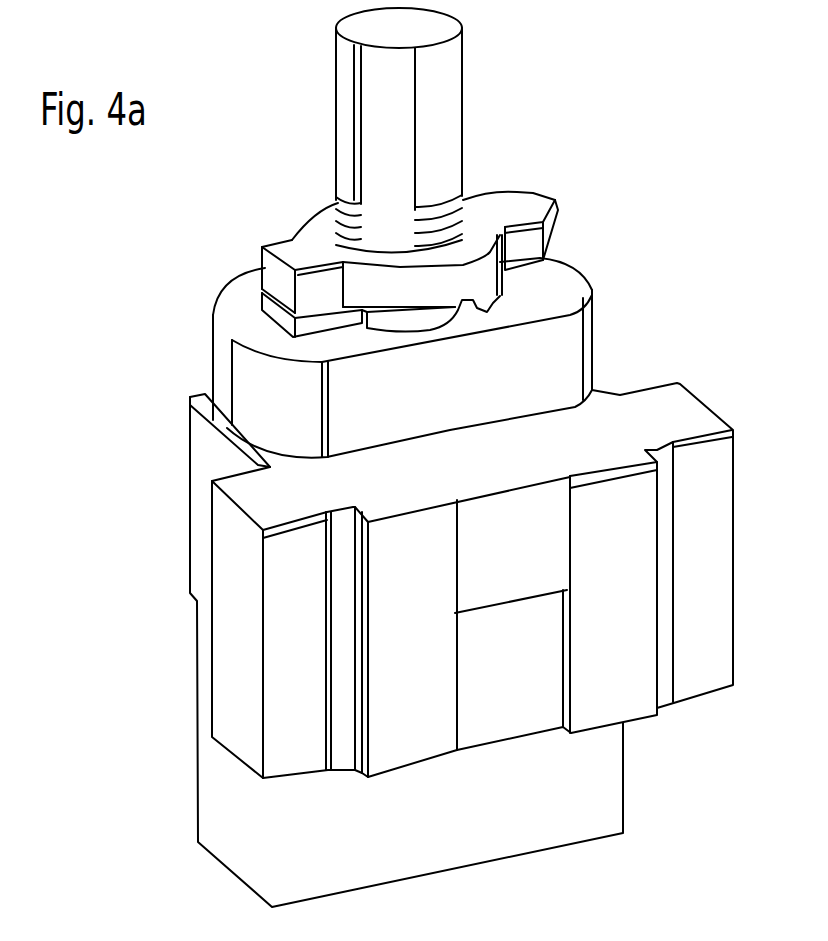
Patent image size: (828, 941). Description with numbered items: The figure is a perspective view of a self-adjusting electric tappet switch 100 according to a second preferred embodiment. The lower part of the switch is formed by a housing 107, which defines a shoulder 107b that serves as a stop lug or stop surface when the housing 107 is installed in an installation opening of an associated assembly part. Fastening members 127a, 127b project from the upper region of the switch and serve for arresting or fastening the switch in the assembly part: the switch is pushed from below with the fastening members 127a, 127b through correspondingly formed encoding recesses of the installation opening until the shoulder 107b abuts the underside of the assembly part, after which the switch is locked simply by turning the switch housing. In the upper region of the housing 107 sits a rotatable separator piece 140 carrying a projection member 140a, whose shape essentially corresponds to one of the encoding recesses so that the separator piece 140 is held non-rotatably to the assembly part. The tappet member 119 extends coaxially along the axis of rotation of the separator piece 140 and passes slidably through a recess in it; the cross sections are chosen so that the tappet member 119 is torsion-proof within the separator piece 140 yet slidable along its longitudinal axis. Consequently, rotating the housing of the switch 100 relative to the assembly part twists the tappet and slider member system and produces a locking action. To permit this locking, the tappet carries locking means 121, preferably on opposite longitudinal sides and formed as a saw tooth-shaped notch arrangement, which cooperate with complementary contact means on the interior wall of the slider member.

The tappet switch 100 is at (689, 204).
The tappet member 119 is at (440, 87).
The locking means 121 is at (350, 206).
The fastening member 127a is at (290, 247).
The fastening member 127b is at (530, 200).
The separator piece 140 is at (425, 317).
The projection member 140a is at (322, 345).
The housing 107 is at (668, 383).
The shoulder 107b is at (220, 307).